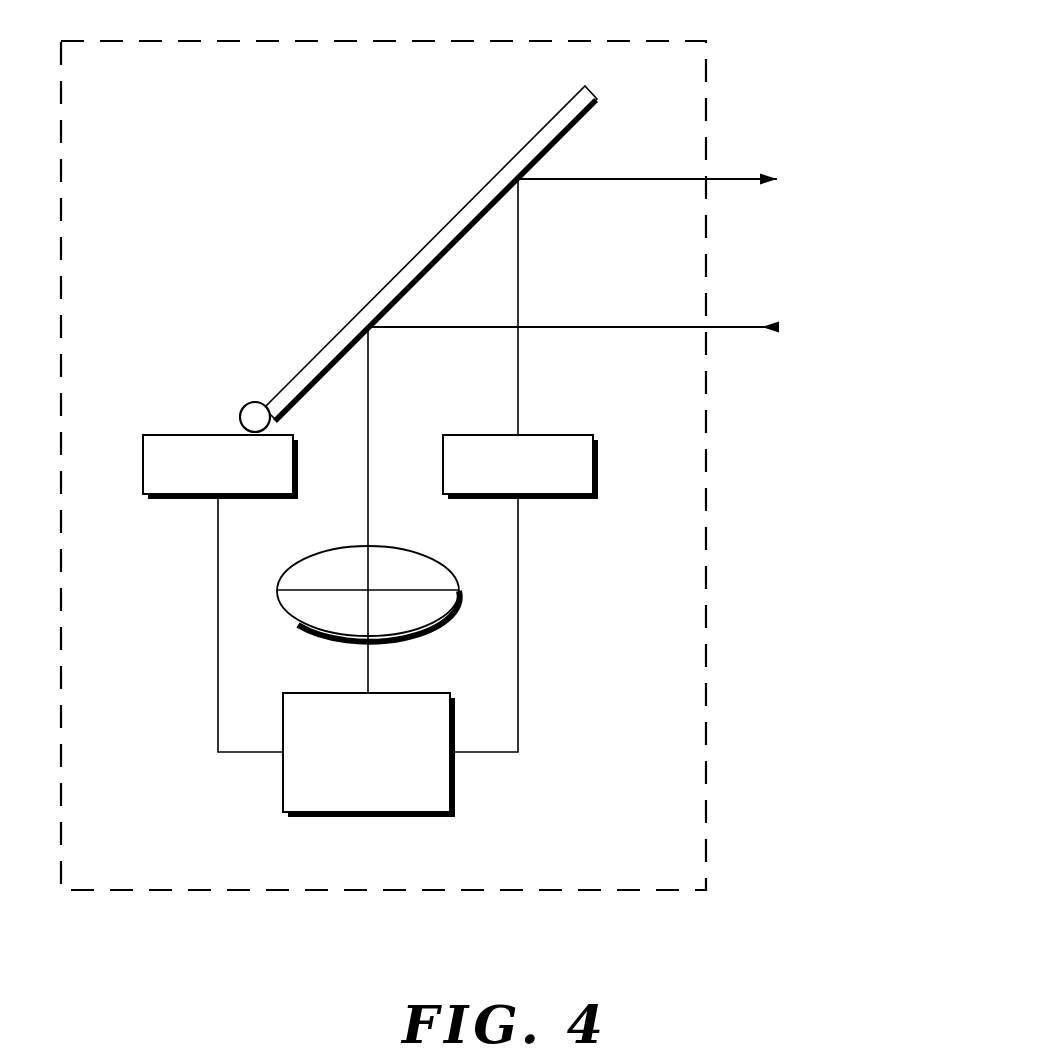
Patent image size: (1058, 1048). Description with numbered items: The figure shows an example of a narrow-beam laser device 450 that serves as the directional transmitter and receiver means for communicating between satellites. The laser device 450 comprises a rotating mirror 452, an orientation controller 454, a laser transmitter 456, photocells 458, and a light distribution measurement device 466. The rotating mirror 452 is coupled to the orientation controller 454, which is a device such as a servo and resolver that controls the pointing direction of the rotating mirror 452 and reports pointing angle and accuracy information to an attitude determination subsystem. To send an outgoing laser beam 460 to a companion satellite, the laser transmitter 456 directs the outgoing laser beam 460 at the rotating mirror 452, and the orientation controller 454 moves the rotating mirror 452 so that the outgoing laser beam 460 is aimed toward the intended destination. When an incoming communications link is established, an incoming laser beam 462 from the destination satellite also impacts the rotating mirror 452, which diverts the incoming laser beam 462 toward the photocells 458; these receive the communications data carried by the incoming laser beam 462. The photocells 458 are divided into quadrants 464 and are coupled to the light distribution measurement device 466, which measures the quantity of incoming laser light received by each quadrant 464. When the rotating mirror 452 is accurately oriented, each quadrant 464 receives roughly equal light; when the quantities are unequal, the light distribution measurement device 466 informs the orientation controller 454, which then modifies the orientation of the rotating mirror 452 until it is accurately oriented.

The laser device 450 is at (589, 41).
The rotating mirror 452 is at (320, 349).
The orientation controller 454 is at (142, 461).
The laser transmitter 456 is at (593, 460).
The photocells 458 is at (460, 605).
The outgoing laser beam 460 is at (657, 181).
The incoming laser beam 462 is at (657, 330).
The quadrants 464 is at (308, 570).
The light distribution measurement device 466 is at (367, 816).